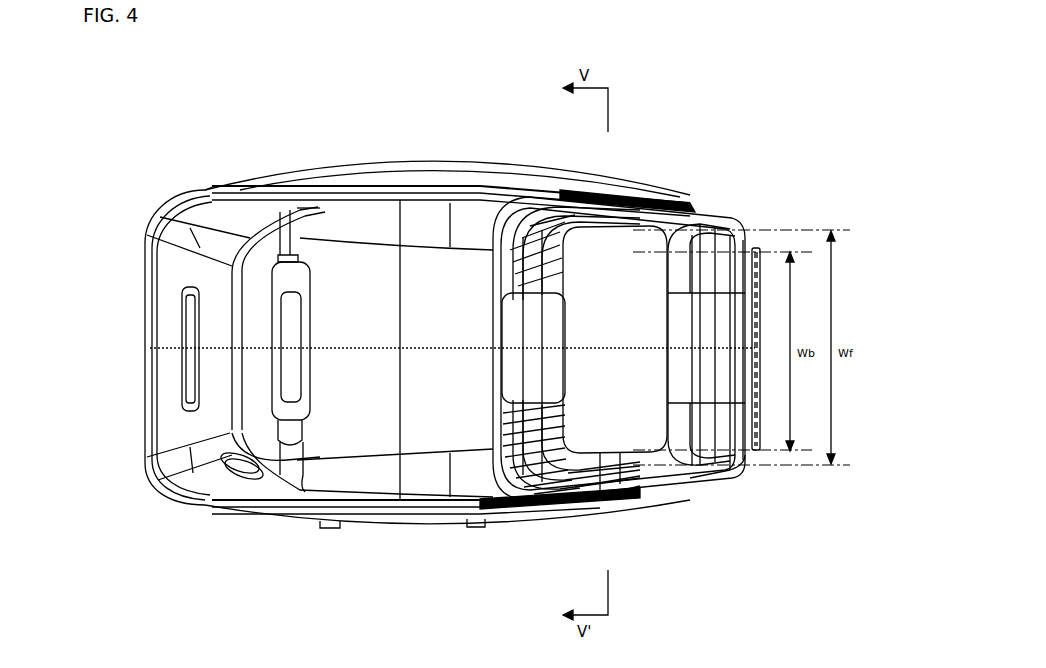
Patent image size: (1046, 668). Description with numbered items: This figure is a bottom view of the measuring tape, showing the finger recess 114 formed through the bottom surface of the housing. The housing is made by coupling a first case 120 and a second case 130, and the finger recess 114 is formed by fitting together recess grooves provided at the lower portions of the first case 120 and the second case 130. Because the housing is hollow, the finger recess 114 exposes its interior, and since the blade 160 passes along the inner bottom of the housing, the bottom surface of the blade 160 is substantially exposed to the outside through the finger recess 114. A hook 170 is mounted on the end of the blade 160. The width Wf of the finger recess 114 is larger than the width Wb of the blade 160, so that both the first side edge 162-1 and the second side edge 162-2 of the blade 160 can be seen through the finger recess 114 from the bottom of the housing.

The first case 120 is at (205, 207).
The second case 130 is at (218, 488).
The blade 160 is at (638, 320).
The first side edge 162-1 is at (607, 252).
The second side edge 162-2 is at (620, 379).
The hook 170 is at (762, 308).
The finger recess 114 is at (718, 482).